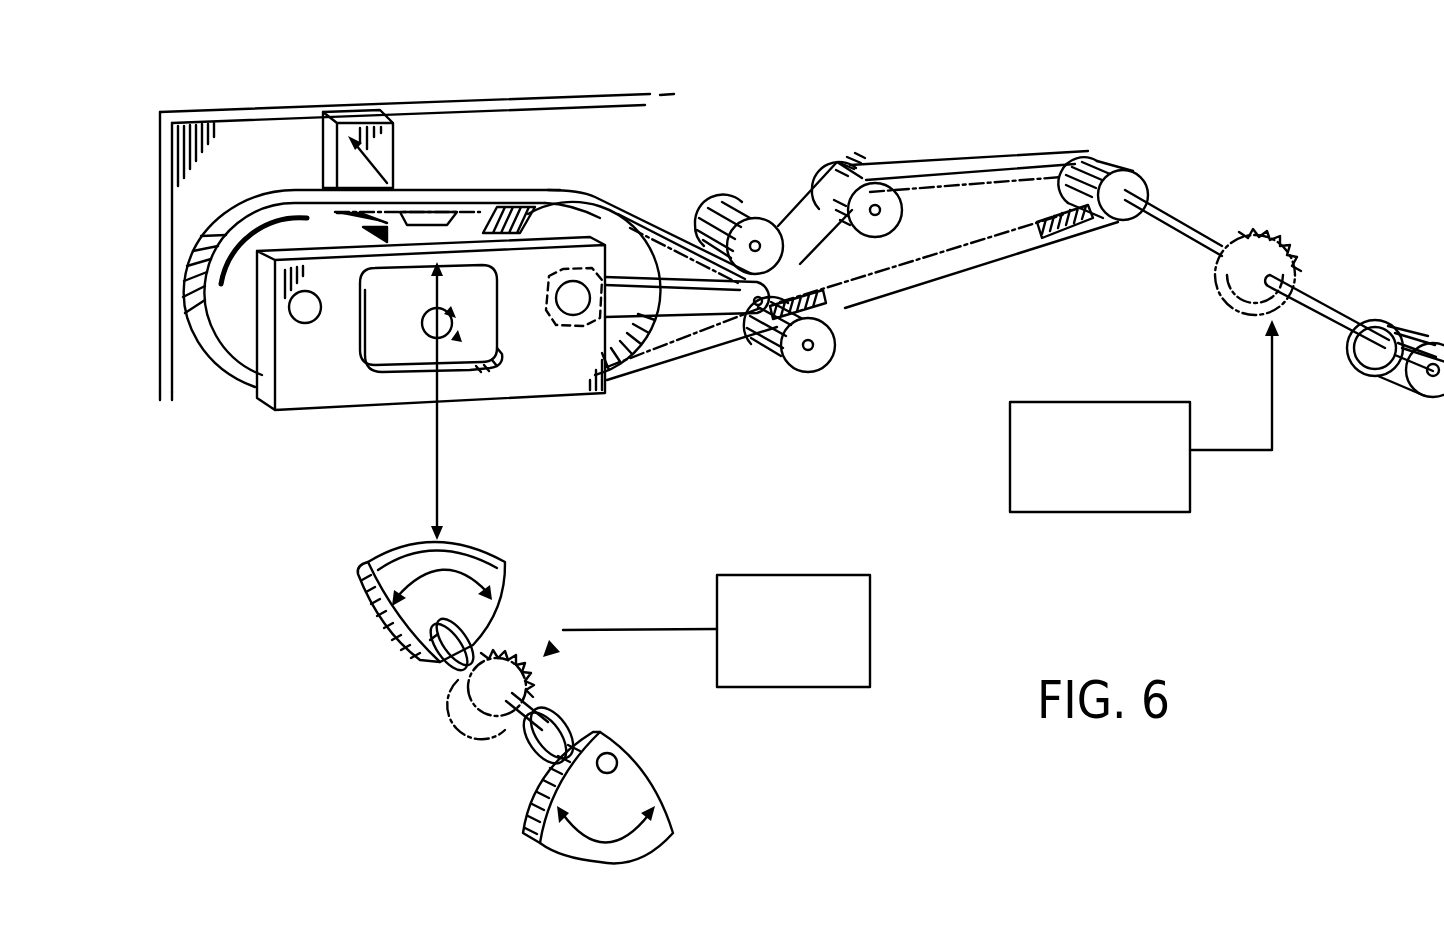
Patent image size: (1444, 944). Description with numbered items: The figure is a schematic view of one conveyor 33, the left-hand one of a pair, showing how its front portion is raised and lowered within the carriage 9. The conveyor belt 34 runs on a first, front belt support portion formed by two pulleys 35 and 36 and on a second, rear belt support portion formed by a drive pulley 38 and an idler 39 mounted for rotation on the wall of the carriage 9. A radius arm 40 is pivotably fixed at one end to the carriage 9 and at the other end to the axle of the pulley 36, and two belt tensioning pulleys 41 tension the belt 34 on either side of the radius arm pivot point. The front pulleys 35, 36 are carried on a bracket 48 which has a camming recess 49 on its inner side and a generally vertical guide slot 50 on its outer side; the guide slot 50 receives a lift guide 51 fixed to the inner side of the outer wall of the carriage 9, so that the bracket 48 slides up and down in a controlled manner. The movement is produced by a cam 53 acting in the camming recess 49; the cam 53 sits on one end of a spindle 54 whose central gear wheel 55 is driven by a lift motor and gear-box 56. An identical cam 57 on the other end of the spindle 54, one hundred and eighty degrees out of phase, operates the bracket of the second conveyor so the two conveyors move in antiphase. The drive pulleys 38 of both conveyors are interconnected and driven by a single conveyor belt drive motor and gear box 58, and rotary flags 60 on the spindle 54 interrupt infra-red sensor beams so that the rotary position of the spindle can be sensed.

The carriage 9 is at (186, 110).
The conveyor 33 is at (258, 430).
The conveyor belt 34 is at (930, 165).
The pulley 35 is at (240, 363).
The pulley 36 is at (600, 218).
The drive pulley 38 is at (1137, 187).
The idler 39 is at (855, 165).
The radius arm 40 is at (690, 300).
The belt tensioning pulleys 41 is at (758, 225).
The bracket 48 is at (313, 403).
The camming recess 49 is at (488, 395).
The guide slot 50 is at (428, 212).
The lift guide 51 is at (325, 155).
The cam 53 is at (380, 577).
The spindle 54 is at (545, 680).
The central gear wheel 55 is at (490, 720).
The lift motor and gear-box 56 is at (820, 575).
The cam 57 is at (630, 770).
The conveyor belt drive motor and gear-box 58 is at (1122, 400).
The rotary flags 60 is at (440, 667).